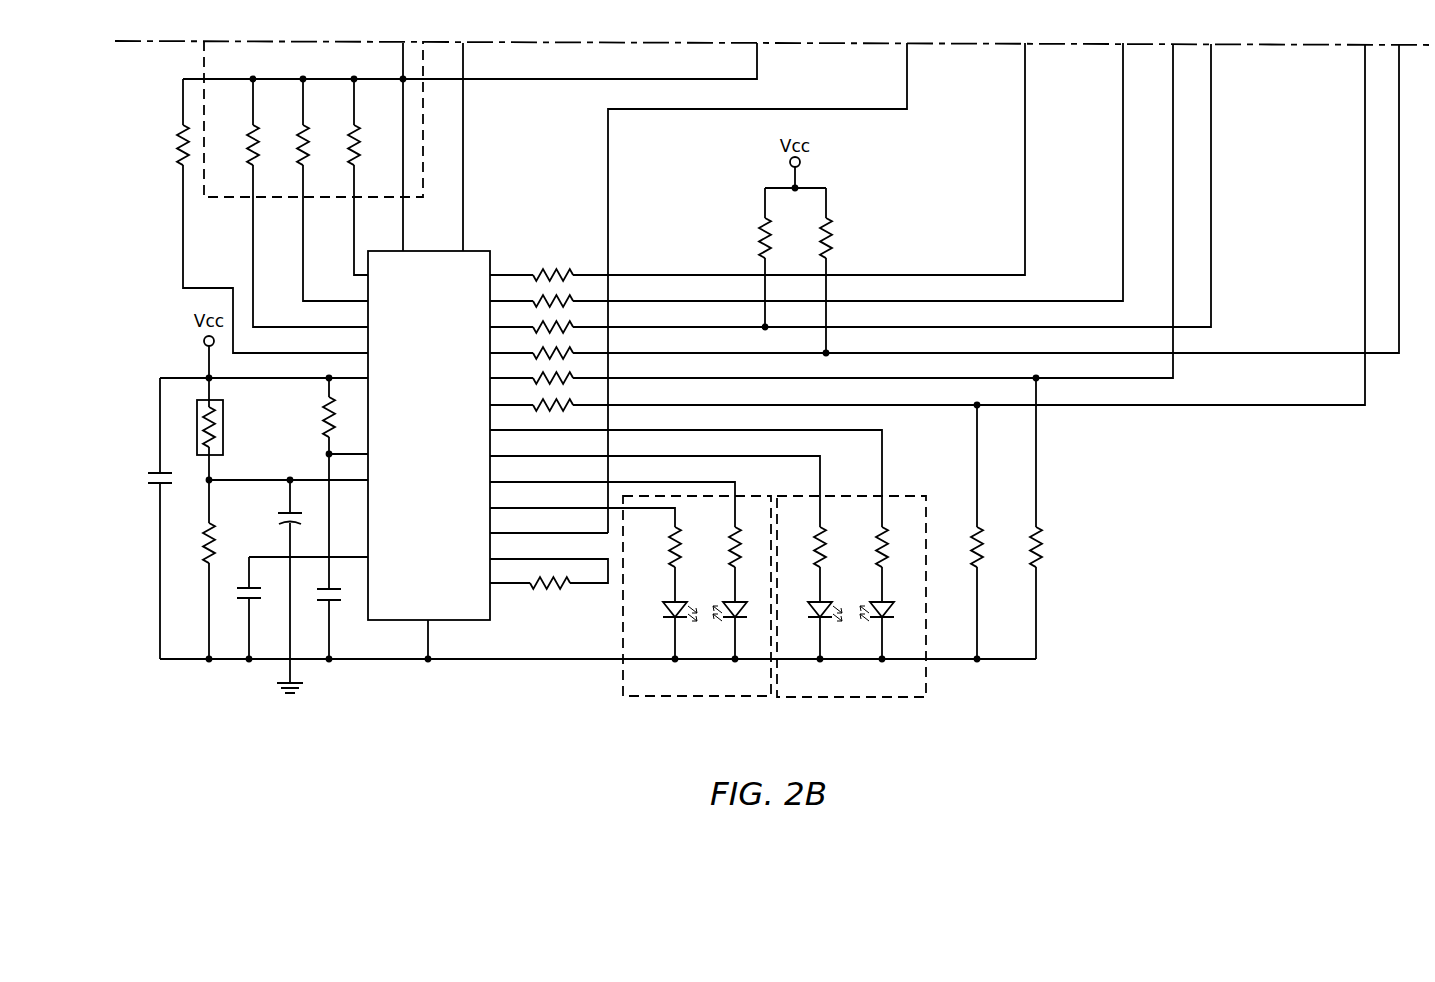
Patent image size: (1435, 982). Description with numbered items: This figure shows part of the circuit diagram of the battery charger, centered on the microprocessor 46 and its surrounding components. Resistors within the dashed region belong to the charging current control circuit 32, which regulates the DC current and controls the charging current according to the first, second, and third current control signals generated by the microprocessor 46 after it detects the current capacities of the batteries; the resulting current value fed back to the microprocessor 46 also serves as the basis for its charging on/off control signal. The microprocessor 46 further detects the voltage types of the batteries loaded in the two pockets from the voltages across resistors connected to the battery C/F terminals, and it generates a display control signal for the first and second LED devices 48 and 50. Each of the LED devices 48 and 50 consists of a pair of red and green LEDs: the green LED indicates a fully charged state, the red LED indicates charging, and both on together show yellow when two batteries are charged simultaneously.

The charging current control circuit 32 is at (204, 52).
The microprocessor 46 is at (481, 251).
The first LED device 48 is at (697, 623).
The second LED device 50 is at (851, 623).